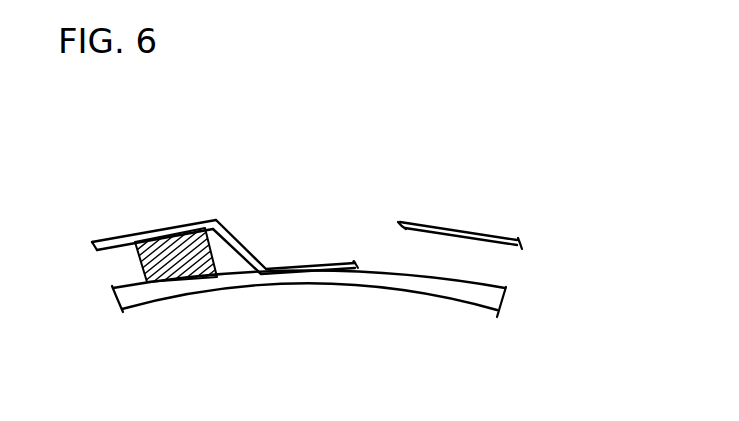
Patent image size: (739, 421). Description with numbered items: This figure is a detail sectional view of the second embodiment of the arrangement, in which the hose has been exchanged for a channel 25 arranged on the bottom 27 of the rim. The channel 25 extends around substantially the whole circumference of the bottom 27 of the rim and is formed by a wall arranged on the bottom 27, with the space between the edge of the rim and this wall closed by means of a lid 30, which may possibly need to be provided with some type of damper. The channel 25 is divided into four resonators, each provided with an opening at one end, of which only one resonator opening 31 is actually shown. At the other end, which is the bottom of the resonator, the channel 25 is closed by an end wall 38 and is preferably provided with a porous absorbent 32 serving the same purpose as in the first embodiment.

The channel 25 is at (488, 263).
The bottom of the rim 27 is at (440, 293).
The lid 30 is at (448, 224).
The resonator opening 31 is at (382, 247).
The porous absorbent 32 is at (167, 224).
The end wall 38 is at (243, 230).